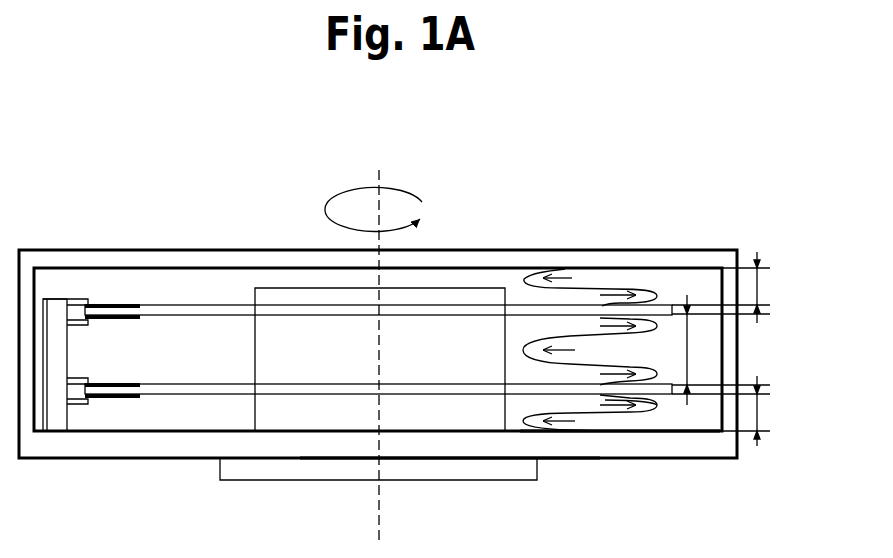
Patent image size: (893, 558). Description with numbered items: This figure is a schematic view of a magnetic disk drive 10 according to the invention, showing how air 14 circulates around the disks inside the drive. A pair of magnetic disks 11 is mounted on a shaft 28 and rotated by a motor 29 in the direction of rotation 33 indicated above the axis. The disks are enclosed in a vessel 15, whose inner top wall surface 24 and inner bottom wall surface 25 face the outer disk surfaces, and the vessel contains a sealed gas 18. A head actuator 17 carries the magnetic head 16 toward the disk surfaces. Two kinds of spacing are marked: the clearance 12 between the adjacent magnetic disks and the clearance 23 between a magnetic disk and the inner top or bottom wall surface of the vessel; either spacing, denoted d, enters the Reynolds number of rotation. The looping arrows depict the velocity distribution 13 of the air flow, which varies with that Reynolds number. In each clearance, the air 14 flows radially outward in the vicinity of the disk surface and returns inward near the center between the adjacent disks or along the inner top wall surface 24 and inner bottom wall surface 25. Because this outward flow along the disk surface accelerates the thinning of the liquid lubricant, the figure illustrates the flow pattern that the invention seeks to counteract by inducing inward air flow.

The magnetic disk drive 10 is at (91, 168).
The magnetic disk 11 is at (168, 307).
The clearance between adjacent magnetic disks 12 is at (688, 352).
The velocity distribution 13 is at (647, 413).
The air 14 is at (617, 295).
The vessel 15 is at (467, 443).
The magnetic head 16 is at (110, 402).
The head actuator 17 is at (57, 422).
The sealed gas 18 is at (73, 283).
The clearance between magnetic disk and inner top or bottom wall surface 23 is at (757, 285).
The inner top wall surface 24 is at (630, 267).
The inner bottom wall surface 25 is at (607, 432).
The shaft 28 is at (263, 293).
The motor 29 is at (242, 475).
The direction of rotation 33 is at (357, 188).